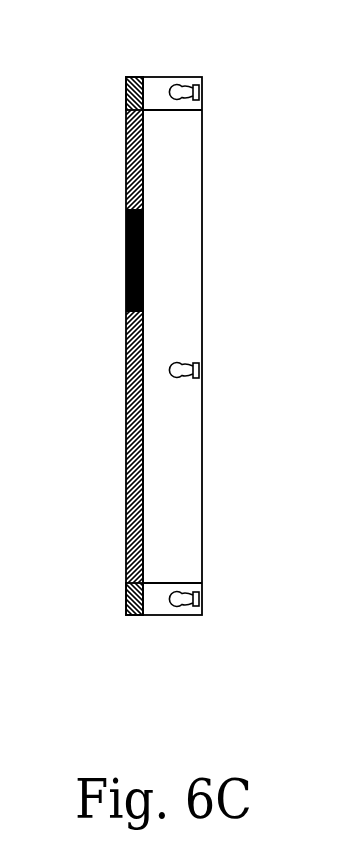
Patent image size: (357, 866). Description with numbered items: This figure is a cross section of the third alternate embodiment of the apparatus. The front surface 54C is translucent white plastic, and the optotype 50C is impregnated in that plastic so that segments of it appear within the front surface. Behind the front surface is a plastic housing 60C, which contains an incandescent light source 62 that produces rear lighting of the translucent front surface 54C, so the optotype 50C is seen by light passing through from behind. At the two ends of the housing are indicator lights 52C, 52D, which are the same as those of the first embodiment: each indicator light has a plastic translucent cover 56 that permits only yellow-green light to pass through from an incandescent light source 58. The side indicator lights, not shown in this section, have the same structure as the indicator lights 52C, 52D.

The optotype 50C is at (160, 367).
The indicator light 52C is at (175, 77).
The indicator light 52D is at (157, 615).
The front surface 54C is at (126, 173).
The plastic translucent cover 56 is at (126, 95).
The incandescent light source 58 is at (199, 93).
The plastic housing 60C is at (202, 205).
The incandescent light source 62 is at (199, 371).